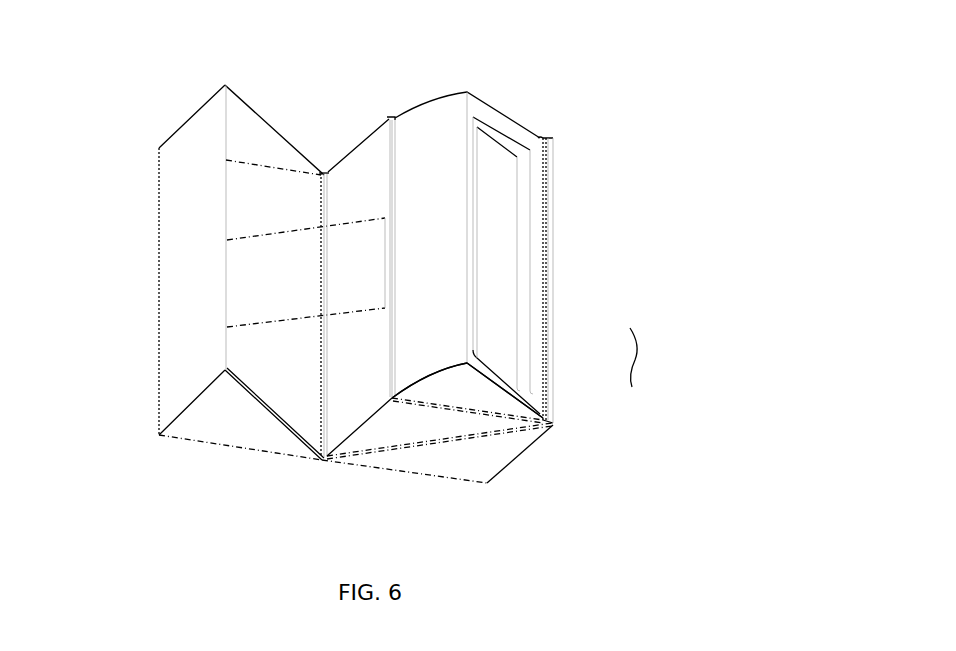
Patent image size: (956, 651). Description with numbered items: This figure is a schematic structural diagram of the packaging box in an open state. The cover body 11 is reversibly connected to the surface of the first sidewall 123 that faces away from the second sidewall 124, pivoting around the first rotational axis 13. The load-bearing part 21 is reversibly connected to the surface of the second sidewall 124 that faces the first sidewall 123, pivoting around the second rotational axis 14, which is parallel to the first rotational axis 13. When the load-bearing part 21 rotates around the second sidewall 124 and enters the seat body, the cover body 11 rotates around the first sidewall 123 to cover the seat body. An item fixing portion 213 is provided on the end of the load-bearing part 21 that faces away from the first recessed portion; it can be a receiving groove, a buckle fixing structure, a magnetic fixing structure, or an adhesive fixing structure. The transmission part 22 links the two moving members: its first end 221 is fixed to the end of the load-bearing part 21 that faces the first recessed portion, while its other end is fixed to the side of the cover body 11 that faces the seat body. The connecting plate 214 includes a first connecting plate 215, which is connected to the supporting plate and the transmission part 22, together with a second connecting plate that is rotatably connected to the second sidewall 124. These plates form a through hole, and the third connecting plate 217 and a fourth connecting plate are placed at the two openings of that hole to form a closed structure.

The cover body 11 is at (185, 203).
The first rotational axis 13 is at (322, 460).
The second rotational axis 14 is at (585, 269).
The load-bearing part 21 is at (437, 127).
The transmission part 22 is at (225, 204).
The first sidewall 123 is at (357, 400).
The second sidewall 124 is at (552, 283).
The item fixing portion 213 is at (497, 220).
The connecting plate 214 is at (661, 357).
The first connecting plate 215 is at (448, 352).
The third connecting plate 217 is at (490, 398).
The first end 221 is at (380, 237).